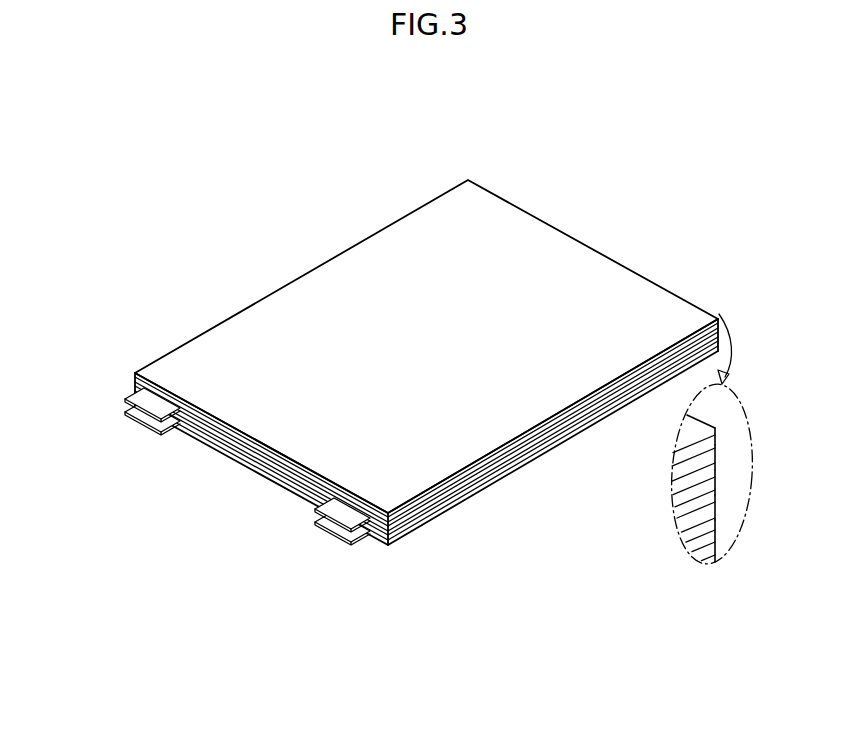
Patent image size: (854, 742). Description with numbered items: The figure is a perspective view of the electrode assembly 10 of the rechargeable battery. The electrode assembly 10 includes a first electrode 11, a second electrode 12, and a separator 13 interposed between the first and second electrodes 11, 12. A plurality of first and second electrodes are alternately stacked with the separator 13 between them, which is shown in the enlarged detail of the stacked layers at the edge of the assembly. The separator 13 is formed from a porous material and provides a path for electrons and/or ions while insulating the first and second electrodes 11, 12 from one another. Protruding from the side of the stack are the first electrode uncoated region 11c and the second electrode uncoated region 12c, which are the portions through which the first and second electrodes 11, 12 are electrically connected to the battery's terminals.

The electrode assembly 10 is at (419, 181).
The first electrode 11 is at (717, 455).
The second electrode 12 is at (717, 507).
The separator 13 is at (717, 431).
The first electrode uncoated region 11c is at (147, 423).
The second electrode uncoated region 12c is at (345, 524).